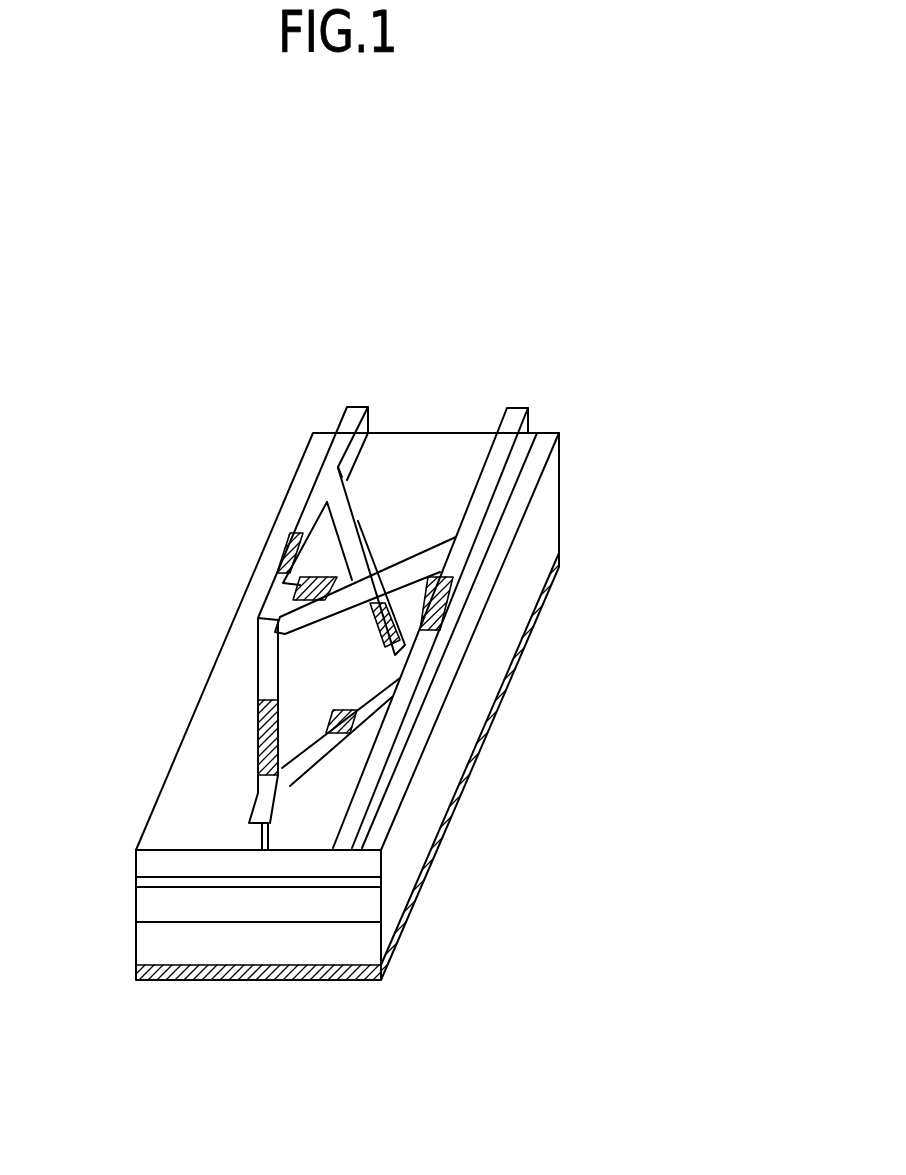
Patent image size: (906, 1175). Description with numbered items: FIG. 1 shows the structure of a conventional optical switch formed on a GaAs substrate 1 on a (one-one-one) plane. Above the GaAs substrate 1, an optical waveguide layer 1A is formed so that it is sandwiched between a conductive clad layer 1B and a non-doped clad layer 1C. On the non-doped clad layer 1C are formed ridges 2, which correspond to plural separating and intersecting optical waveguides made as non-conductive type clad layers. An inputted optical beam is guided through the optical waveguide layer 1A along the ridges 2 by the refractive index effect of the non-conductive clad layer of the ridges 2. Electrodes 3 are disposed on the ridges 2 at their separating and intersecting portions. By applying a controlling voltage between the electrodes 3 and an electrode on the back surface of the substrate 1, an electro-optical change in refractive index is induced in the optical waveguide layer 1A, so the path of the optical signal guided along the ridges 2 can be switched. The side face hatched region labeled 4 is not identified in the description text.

The GaAs substrate 1 is at (293, 952).
The optical waveguide layer 1A is at (135, 882).
The conductive clad layer 1B is at (222, 908).
The non-doped clad layer 1C is at (172, 823).
The ridges 2 is at (362, 402).
The electrodes 3 is at (262, 720).
The side face 4 is at (418, 848).